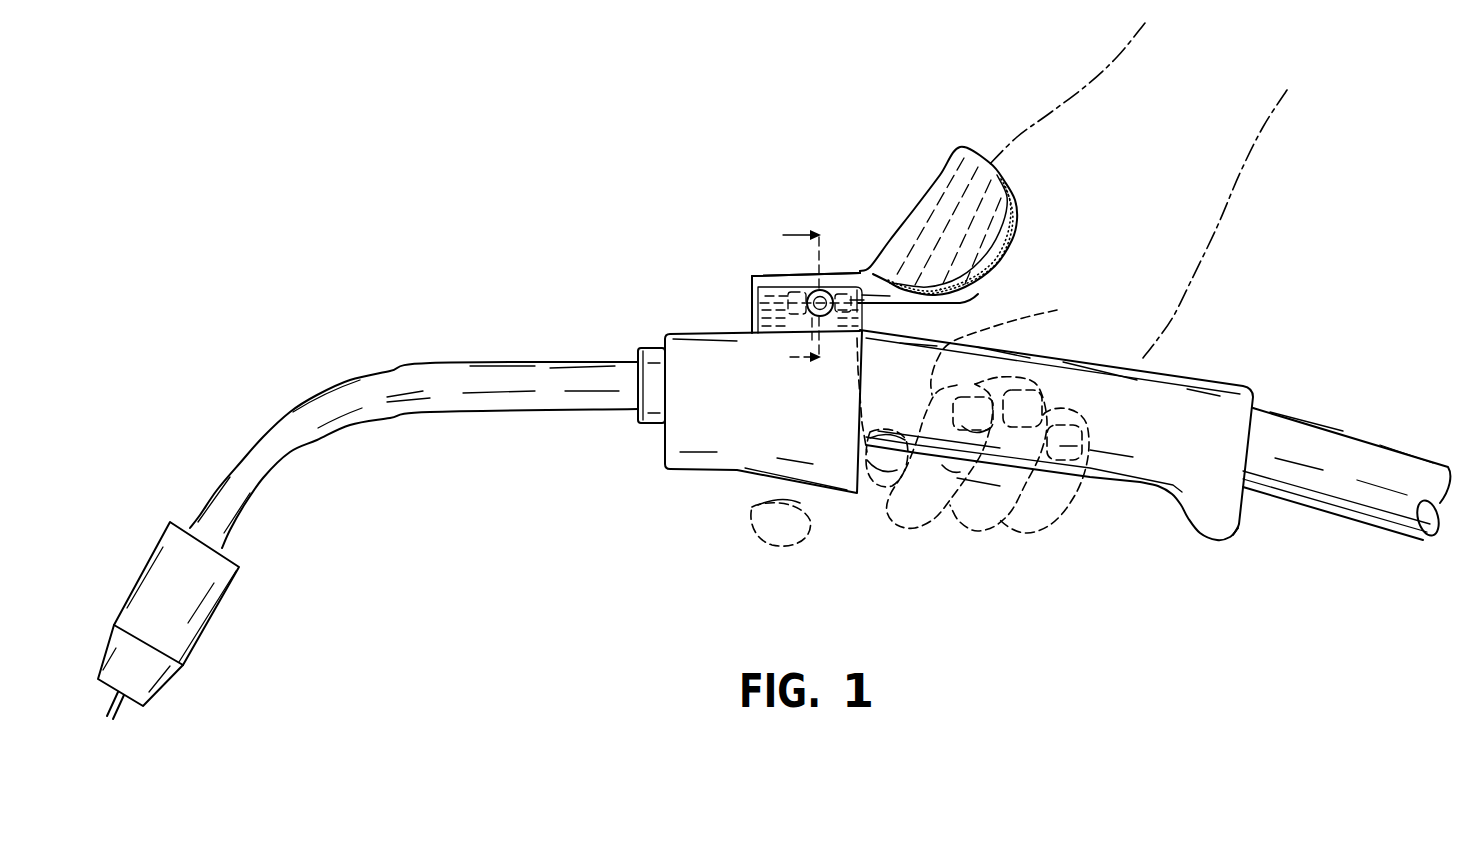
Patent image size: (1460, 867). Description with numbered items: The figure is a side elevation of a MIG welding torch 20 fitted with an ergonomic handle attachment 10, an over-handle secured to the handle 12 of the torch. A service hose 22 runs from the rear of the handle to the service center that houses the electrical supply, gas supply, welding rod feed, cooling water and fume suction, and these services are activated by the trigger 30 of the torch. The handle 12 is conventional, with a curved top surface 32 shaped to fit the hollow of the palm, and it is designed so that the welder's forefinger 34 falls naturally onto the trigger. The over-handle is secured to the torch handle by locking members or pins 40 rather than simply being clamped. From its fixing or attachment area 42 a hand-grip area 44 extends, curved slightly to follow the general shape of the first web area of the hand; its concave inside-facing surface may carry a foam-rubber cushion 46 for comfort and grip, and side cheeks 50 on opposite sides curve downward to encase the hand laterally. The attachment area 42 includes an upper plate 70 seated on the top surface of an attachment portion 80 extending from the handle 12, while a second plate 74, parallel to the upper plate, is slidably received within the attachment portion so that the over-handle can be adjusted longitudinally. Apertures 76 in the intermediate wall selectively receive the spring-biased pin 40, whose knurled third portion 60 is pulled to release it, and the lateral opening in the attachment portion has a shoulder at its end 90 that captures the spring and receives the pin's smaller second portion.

The ergonomic handle attachment 10 is at (913, 205).
The handle 12 is at (1134, 493).
The MIG welding torch 20 is at (523, 338).
The service hose 22 is at (1347, 497).
The trigger 30 is at (825, 497).
The curved top surface 32 is at (1110, 352).
The forefinger 34 is at (773, 507).
The locking pin 40 is at (827, 284).
The attachment area 42 is at (785, 273).
The hand-grip area 44 is at (952, 160).
The foam-rubber cushion 46 is at (1013, 227).
The side cheeks 50 is at (990, 190).
The third portion 60 is at (829, 310).
The upper plate 70 is at (753, 273).
The second plate 74 is at (807, 312).
The apertures 76 is at (753, 297).
The attachment portion 80 is at (973, 303).
The end 90 is at (810, 310).